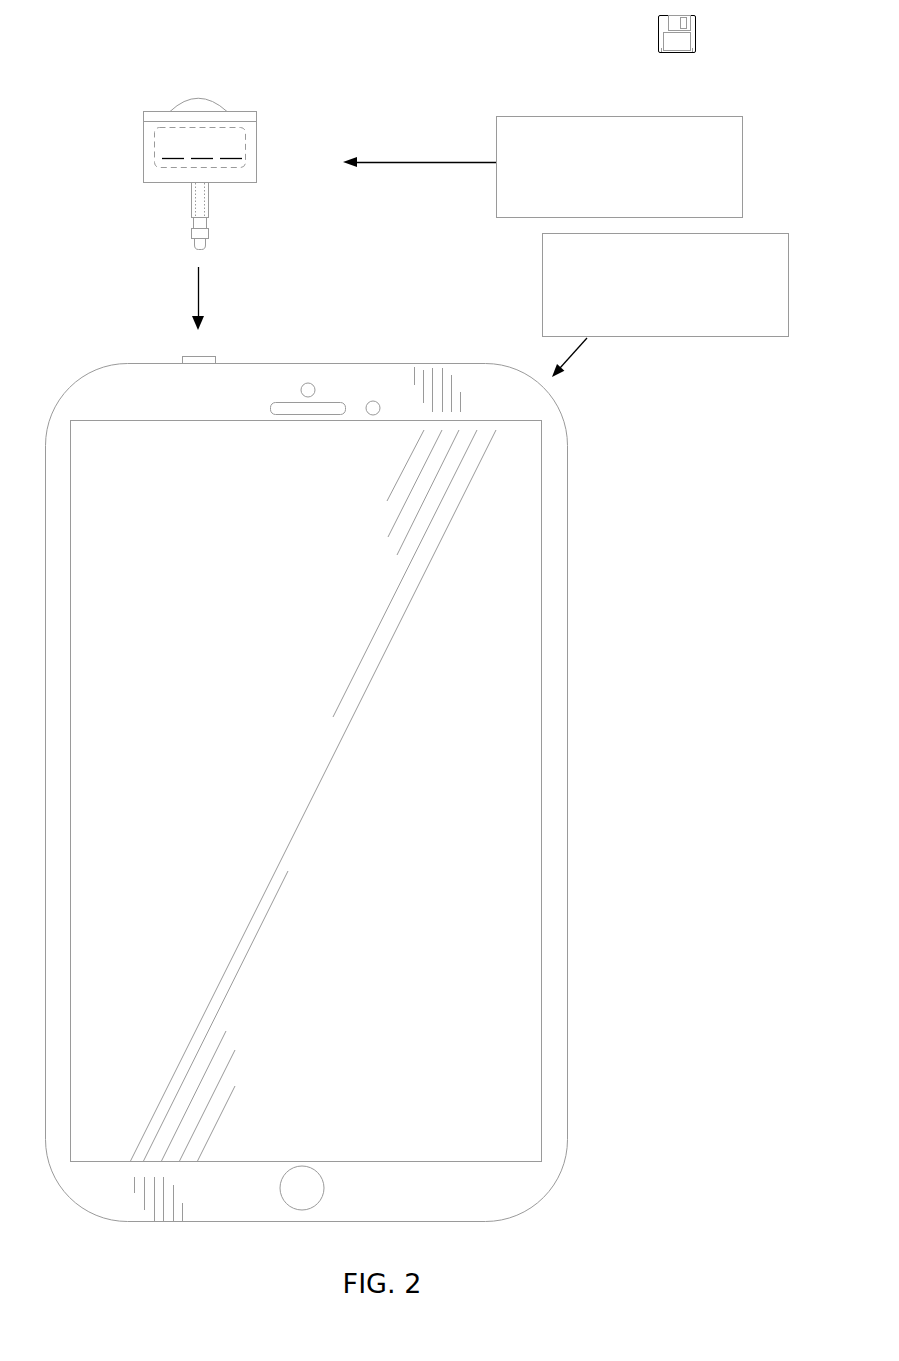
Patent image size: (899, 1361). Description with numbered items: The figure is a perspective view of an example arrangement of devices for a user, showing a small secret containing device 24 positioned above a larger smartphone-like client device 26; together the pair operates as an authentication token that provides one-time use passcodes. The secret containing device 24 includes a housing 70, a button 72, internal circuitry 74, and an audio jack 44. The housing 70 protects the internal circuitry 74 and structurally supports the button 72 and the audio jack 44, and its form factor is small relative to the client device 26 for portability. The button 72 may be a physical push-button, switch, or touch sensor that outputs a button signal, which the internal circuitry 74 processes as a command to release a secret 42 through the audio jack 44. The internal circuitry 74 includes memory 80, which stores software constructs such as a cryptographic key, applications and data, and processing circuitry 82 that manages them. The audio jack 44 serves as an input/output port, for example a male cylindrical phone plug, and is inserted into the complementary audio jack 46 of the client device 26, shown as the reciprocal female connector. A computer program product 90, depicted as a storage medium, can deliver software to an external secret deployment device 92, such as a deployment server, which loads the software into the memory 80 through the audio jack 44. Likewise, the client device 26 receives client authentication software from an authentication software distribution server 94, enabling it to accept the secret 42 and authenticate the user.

The secret containing device 24 is at (206, 144).
The client device 26 is at (422, 320).
The secret 42 is at (200, 287).
The audio jack 44 is at (198, 197).
The complementary audio jack 46 is at (192, 356).
The housing 70 is at (257, 155).
The button 72 is at (215, 103).
The internal circuitry 74 is at (200, 148).
The memory 80 is at (206, 148).
The processing circuitry 82 is at (231, 148).
The computer program product 90 is at (668, 60).
The external secret deployment device 92 is at (717, 176).
The authentication software distribution server 94 is at (758, 308).